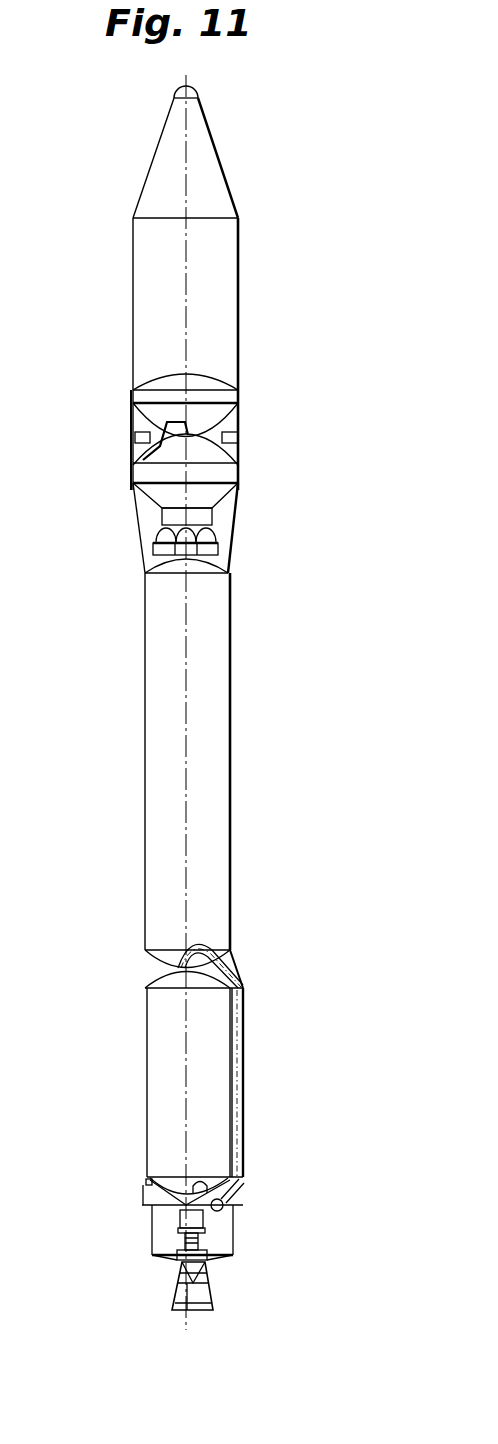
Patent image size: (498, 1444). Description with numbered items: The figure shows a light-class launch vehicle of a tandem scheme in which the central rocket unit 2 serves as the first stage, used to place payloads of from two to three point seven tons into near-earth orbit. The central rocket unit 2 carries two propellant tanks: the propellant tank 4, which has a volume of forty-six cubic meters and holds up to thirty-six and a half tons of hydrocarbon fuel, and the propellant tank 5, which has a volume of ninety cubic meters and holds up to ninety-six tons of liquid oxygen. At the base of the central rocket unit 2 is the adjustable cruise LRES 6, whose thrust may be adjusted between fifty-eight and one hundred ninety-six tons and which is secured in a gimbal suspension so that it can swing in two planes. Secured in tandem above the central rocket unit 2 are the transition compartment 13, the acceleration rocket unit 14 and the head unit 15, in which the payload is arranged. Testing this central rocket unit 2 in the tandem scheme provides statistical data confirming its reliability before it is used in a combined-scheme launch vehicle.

The central rocket unit 2 is at (236, 750).
The propellant tank 4 is at (167, 1058).
The propellant tank 5 is at (162, 767).
The adjustable cruise LRES 6 is at (182, 1295).
The transition compartment 13 is at (223, 523).
The acceleration rocket unit 14 is at (217, 460).
The head unit 15 is at (220, 310).